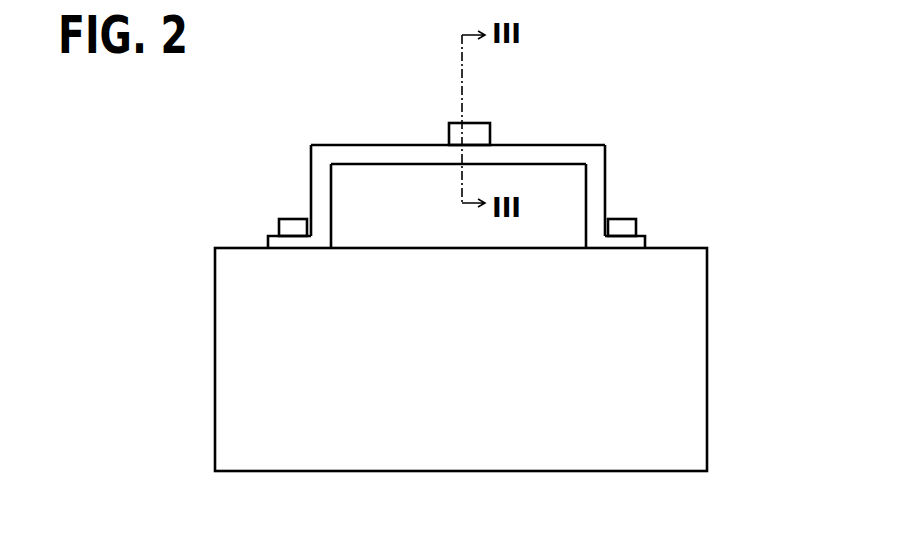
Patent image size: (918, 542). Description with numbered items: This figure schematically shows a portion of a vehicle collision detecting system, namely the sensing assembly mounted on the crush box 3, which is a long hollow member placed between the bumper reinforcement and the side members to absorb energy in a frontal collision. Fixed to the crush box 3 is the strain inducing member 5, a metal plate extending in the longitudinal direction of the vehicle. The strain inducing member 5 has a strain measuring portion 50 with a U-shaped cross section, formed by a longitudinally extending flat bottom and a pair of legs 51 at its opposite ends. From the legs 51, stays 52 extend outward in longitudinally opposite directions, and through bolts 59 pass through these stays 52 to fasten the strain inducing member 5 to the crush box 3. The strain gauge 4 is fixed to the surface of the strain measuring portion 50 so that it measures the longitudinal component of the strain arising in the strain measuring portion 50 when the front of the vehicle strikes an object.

The crush box 3 is at (690, 350).
The strain gauge 4 is at (472, 130).
The strain inducing member 5 is at (462, 151).
The strain measuring portion 50 is at (413, 148).
The legs 51 is at (320, 190).
The stays 52 is at (283, 250).
The through bolts 59 is at (285, 225).